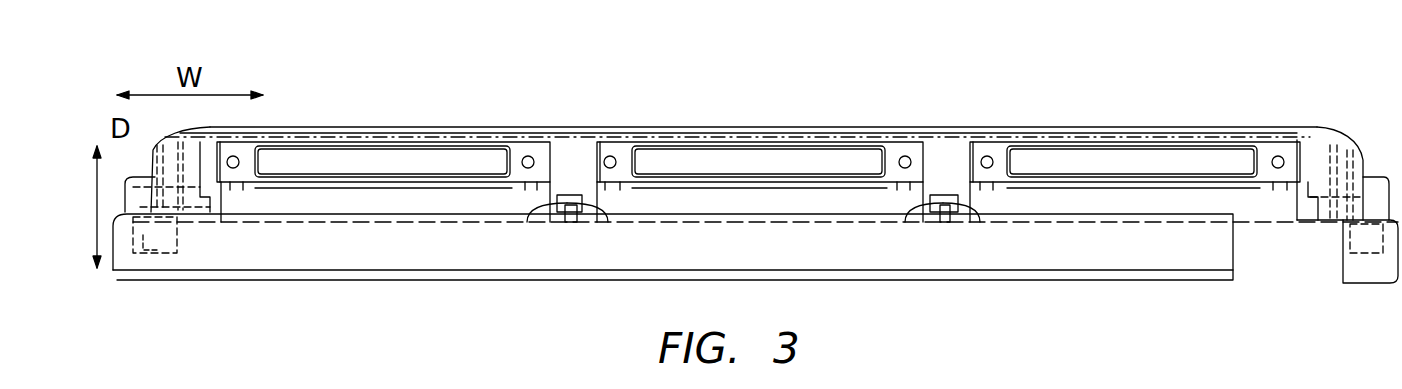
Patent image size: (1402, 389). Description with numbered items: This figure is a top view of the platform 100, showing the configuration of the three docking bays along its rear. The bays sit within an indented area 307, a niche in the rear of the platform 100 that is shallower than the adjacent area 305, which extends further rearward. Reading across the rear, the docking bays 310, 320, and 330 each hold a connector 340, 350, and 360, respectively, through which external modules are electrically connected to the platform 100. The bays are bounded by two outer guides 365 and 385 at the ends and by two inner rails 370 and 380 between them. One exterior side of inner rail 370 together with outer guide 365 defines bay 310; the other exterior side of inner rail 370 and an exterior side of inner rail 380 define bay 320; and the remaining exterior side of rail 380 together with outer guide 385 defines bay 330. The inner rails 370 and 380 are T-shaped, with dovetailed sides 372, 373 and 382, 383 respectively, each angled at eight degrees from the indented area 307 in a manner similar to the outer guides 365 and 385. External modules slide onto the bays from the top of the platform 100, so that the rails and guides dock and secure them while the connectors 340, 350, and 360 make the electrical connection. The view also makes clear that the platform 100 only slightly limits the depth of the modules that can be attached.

The platform 100 is at (546, 79).
The area 305 is at (1314, 123).
The indented area 307 is at (1121, 202).
The docking bay 310 is at (1085, 142).
The docking bay 320 is at (699, 134).
The docking bay 330 is at (392, 128).
The connector 340 is at (1177, 168).
The connector 350 is at (812, 162).
The connector 360 is at (422, 162).
The outer guide 365 is at (1303, 207).
The inner rail 370 is at (945, 195).
The dovetailed side 372 is at (905, 222).
The dovetailed side 373 is at (980, 222).
The inner rail 380 is at (570, 195).
The dovetailed side 382 is at (528, 222).
The dovetailed side 383 is at (608, 220).
The outer guide 385 is at (207, 207).